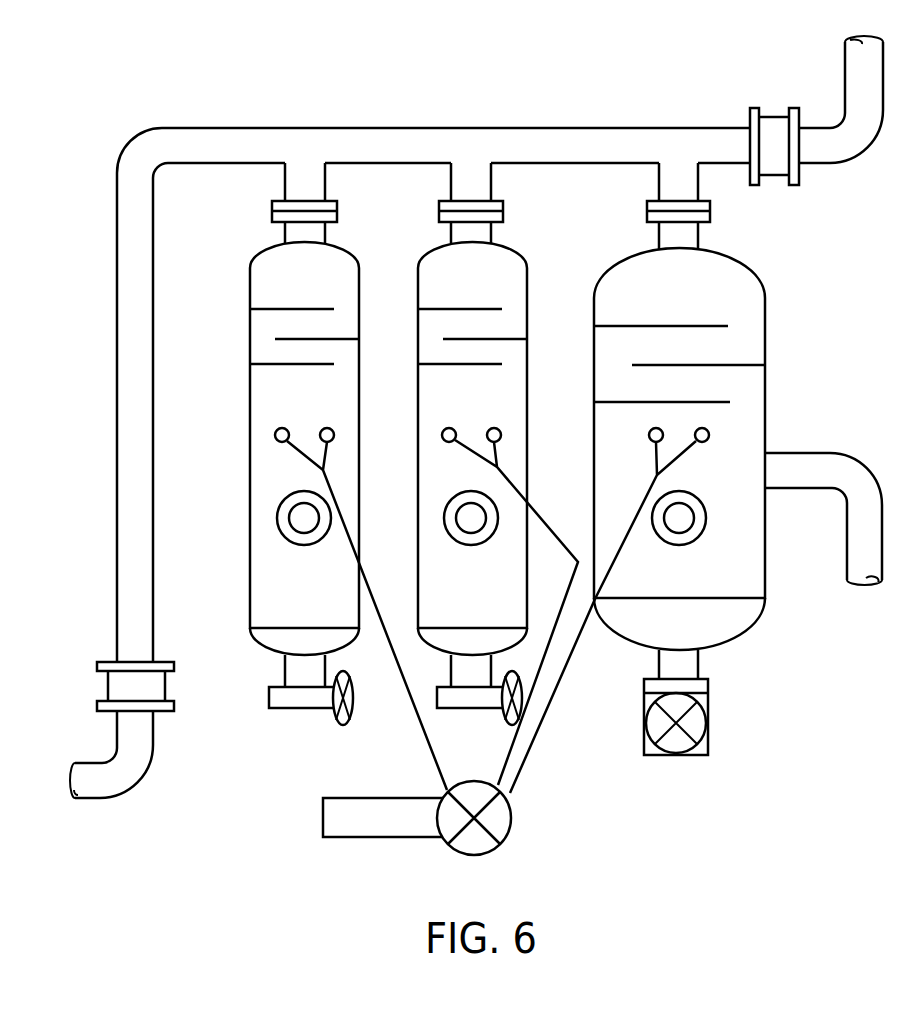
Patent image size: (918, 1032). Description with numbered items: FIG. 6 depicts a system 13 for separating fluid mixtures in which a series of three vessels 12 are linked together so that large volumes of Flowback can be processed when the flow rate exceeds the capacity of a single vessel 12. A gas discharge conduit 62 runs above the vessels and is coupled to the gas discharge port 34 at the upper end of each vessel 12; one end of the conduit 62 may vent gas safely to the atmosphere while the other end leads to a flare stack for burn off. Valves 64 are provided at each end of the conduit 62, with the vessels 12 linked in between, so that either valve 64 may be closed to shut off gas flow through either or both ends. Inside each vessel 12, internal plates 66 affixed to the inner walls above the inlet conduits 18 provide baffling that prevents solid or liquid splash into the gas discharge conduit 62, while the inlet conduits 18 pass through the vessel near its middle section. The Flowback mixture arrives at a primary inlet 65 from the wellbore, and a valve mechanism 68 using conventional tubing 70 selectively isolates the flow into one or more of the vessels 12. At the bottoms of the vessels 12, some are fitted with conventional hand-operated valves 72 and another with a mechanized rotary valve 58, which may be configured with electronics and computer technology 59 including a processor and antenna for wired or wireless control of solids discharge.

The system 13 is at (114, 126).
The gas discharge conduit 62 is at (593, 140).
The valve 64 is at (773, 120).
The vessel 12 is at (268, 258).
The gas discharge port 34 is at (695, 238).
The internal plate 66 is at (723, 330).
The inlet conduit 18 is at (277, 430).
The hand-operated valve 72 is at (297, 702).
The tubing 70 is at (550, 713).
The valve mechanism 68 is at (512, 817).
The primary inlet 65 is at (360, 838).
The electronics and computer technology 59 is at (698, 665).
The rotary valve 58 is at (695, 755).